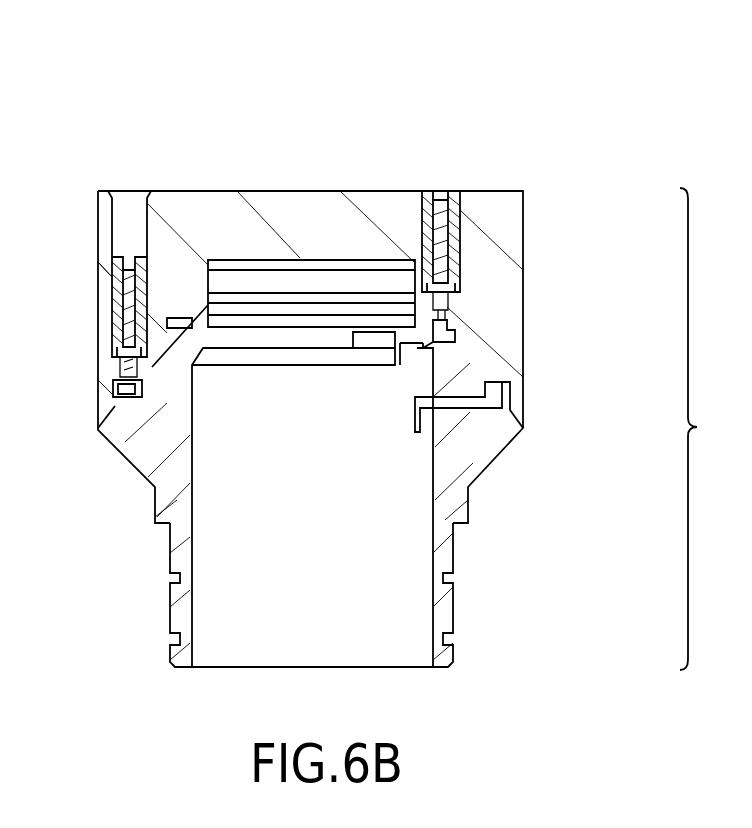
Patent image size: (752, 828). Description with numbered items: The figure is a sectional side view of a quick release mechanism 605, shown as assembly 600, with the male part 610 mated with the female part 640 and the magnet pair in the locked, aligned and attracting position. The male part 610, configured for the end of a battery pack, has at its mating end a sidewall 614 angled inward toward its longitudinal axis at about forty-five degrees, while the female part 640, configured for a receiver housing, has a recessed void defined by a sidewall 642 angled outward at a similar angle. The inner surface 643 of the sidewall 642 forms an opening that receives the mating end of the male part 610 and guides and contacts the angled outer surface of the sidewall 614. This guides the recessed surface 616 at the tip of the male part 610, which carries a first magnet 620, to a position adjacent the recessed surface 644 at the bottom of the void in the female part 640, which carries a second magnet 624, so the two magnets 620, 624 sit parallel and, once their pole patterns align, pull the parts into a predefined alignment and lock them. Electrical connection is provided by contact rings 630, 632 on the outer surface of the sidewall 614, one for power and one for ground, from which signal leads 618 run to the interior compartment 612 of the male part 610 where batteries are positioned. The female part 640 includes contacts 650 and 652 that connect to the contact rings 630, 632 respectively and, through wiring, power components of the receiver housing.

The connector assembly 600 is at (557, 134).
The quick release mechanism 605 is at (710, 429).
The male part 610 is at (475, 580).
The interior space or compartment 612 is at (340, 620).
The sidewall 614 is at (480, 357).
The recessed surface 616 is at (253, 312).
The signal leads or wires 618 is at (423, 342).
The first magnet 620 is at (208, 285).
The second magnet 624 is at (297, 267).
The electrical contact ring 630 is at (518, 398).
The electrical contact ring 632 is at (460, 322).
The female part 640 is at (538, 207).
The sidewall 642 is at (93, 377).
The inner surface 643 is at (157, 368).
The recessed surface 644 is at (258, 265).
The contact 650 is at (110, 320).
The contact 652 is at (443, 188).